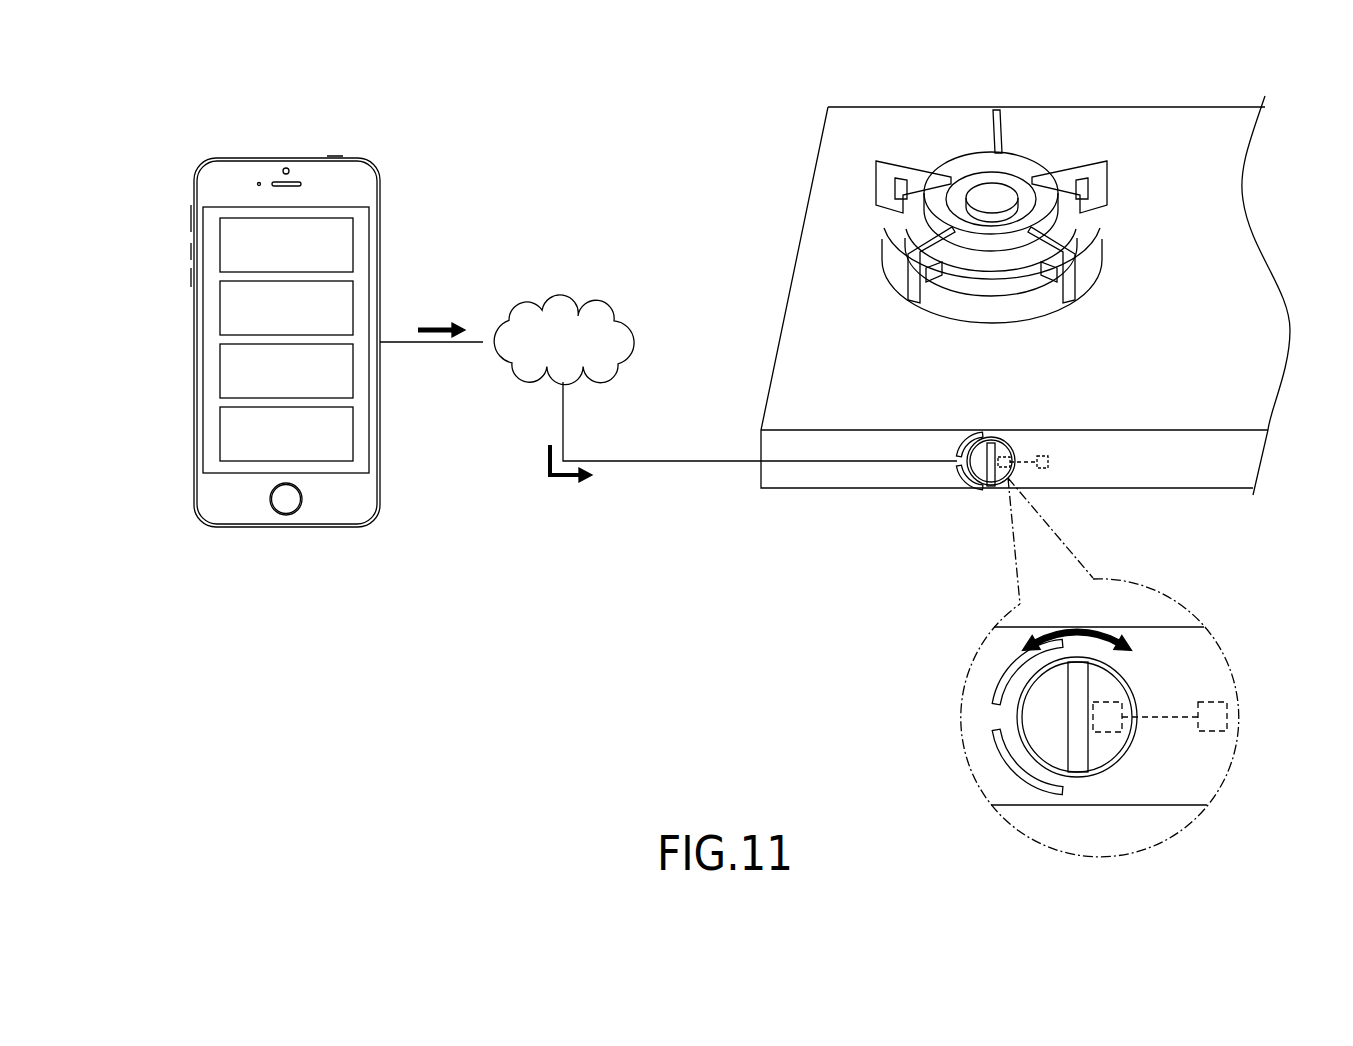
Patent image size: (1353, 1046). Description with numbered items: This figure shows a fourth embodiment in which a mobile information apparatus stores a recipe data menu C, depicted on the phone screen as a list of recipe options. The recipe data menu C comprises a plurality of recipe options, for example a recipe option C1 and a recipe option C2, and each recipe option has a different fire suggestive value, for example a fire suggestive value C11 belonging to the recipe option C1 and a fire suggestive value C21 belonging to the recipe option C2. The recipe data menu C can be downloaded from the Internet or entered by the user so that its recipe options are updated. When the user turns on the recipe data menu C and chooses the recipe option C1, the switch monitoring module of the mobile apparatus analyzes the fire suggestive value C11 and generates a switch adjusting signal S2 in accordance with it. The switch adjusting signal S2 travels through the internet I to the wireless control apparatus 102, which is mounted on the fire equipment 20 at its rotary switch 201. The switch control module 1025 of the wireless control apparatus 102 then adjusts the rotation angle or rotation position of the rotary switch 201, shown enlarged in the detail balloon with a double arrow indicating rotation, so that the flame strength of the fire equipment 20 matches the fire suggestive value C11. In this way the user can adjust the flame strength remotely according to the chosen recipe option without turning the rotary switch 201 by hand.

The recipe data menu C is at (363, 240).
The recipe option C1 is at (220, 240).
The fire suggestive value C11 is at (220, 307).
The recipe option C2 is at (220, 369).
The fire suggestive value C21 is at (220, 432).
The switch adjusting signal S2 is at (668, 389).
The internet I is at (563, 302).
The fire equipment 20 is at (1157, 118).
The rotary switch 201 is at (1043, 689).
The wireless control apparatus 102 is at (1108, 723).
The switch control module 1025 is at (1212, 706).